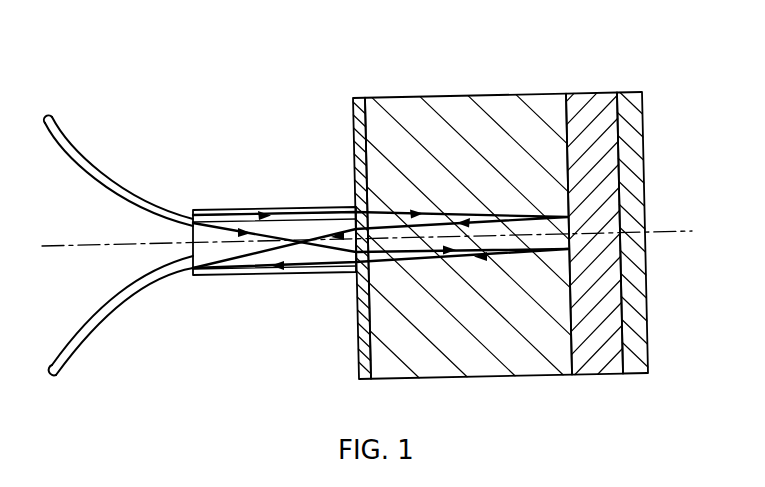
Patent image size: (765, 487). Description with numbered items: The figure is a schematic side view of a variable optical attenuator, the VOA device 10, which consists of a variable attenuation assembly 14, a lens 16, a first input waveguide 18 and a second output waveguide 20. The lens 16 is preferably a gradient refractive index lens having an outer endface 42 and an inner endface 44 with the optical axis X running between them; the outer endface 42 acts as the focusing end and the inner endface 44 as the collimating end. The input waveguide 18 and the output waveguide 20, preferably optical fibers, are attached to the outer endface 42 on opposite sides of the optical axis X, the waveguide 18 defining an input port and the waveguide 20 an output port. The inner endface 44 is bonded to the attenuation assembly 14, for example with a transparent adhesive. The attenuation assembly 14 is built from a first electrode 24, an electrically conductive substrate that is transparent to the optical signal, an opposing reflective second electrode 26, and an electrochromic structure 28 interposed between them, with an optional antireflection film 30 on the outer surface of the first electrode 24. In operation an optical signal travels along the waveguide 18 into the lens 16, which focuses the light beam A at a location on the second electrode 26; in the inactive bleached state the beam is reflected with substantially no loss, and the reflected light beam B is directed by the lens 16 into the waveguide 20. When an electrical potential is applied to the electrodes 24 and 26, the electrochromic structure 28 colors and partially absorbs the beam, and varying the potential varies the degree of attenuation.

The VOA device 10 is at (226, 87).
The variable attenuation assembly 14 is at (638, 78).
The lens 16 is at (260, 274).
The first input waveguide 18 is at (82, 158).
The second output waveguide 20 is at (87, 332).
The first electrode 24 is at (393, 328).
The second electrode 26 is at (633, 288).
The electrochromic structure 28 is at (588, 352).
The antireflection film 30 is at (352, 120).
The outer endface 42 is at (188, 252).
The inner endface 44 is at (360, 228).
The light beam A is at (214, 225).
The reflected light beam B is at (222, 267).
The optical axis X is at (703, 230).